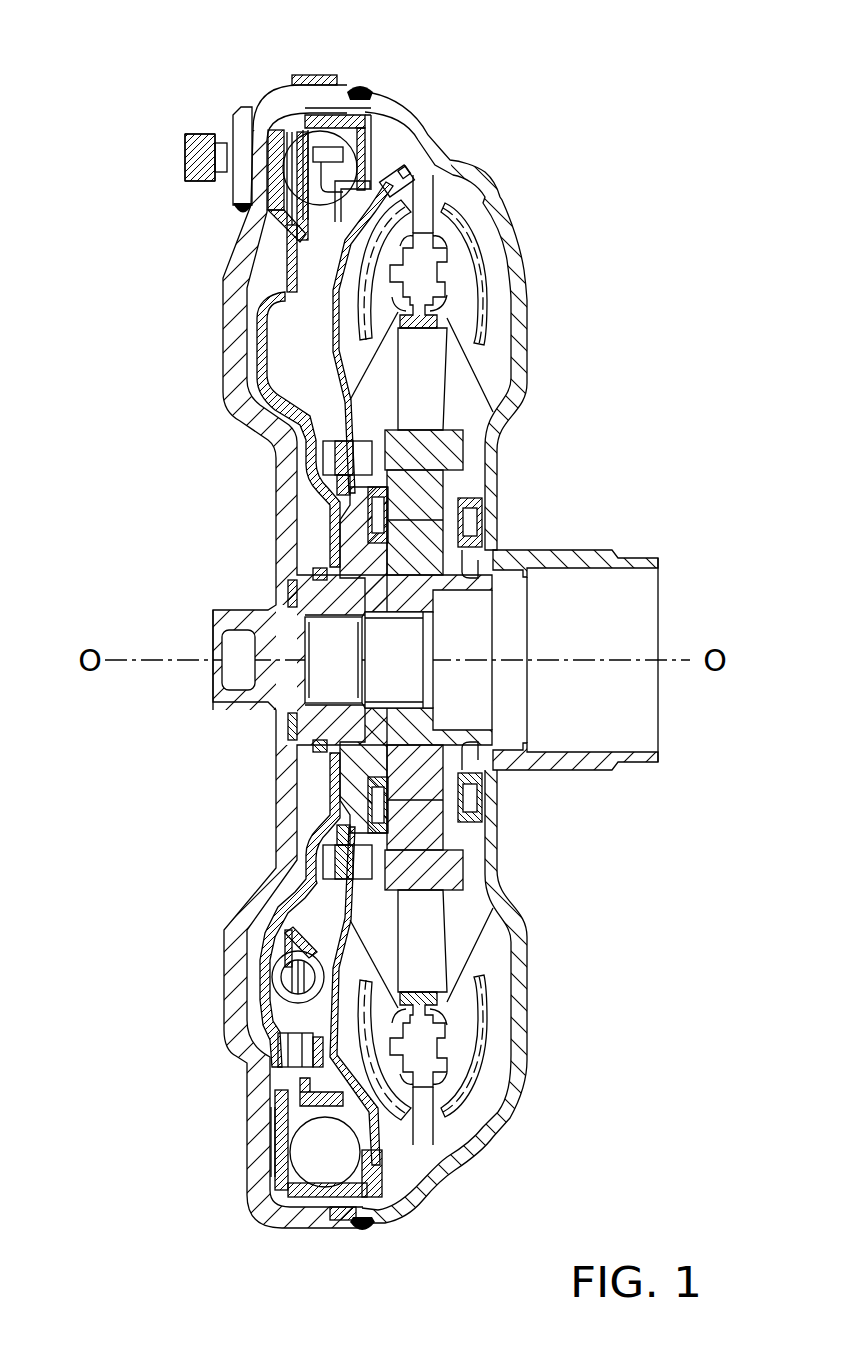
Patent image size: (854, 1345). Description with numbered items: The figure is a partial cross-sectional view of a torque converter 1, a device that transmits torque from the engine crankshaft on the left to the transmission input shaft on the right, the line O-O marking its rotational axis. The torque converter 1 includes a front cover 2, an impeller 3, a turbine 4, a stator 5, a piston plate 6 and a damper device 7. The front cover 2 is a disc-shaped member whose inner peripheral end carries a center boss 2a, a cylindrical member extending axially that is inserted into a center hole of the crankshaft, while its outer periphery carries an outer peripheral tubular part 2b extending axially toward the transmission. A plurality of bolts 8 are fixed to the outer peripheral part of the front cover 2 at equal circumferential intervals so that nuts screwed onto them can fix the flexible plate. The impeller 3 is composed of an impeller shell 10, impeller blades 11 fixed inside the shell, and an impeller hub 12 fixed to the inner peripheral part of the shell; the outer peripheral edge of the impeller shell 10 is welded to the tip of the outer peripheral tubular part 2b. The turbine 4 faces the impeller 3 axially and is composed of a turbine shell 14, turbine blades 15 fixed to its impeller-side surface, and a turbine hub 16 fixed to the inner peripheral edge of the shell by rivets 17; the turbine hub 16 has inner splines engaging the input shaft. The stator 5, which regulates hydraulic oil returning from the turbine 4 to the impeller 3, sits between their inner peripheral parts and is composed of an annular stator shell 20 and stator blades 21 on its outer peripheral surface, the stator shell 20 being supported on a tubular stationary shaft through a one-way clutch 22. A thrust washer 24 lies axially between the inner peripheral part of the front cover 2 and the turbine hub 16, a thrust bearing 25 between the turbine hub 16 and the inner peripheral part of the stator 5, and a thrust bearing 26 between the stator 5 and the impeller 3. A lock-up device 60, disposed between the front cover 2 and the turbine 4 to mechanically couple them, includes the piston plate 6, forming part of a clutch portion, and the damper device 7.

The torque converter 1 is at (132, 124).
The front cover 2 is at (243, 282).
The center boss 2a is at (253, 615).
The outer peripheral tubular part 2b is at (310, 97).
The impeller 3 is at (504, 191).
The turbine 4 is at (392, 165).
The stator 5 is at (450, 386).
The piston plate 6 is at (258, 340).
The damper device 7 is at (301, 128).
The bolts 8 is at (194, 134).
The impeller shell 10 is at (511, 240).
The impeller blades 11 is at (497, 273).
The impeller hub 12 is at (576, 556).
The turbine shell 14 is at (384, 192).
The turbine blades 15 is at (357, 203).
The turbine hub 16 is at (360, 533).
The rivets 17 is at (330, 452).
The stator shell 20 is at (447, 468).
The stator blades 21 is at (432, 402).
The one-way clutch 22 is at (465, 530).
The thrust washer 24 is at (292, 727).
The thrust bearing 25 is at (367, 797).
The thrust bearing 26 is at (472, 797).
The lock-up device 60 is at (273, 120).